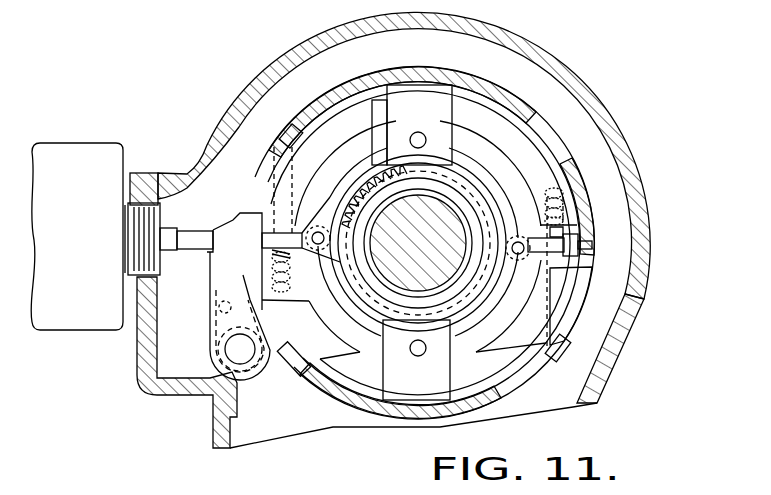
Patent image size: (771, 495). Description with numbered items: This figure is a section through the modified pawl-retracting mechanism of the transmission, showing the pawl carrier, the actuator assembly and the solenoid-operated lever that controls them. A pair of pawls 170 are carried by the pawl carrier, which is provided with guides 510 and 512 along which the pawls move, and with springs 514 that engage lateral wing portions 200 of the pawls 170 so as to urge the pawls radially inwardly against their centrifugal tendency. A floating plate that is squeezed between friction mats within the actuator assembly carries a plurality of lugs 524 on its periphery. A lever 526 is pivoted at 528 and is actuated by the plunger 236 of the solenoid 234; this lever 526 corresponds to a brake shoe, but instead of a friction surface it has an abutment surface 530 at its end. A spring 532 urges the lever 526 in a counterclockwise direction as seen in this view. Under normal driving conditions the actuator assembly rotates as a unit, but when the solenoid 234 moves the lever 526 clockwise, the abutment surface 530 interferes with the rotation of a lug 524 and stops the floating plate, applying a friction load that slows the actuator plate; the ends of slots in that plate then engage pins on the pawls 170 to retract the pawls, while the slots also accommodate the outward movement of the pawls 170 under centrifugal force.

The solenoid 234 is at (80, 148).
The plunger 236 is at (168, 232).
The wing portions 200 is at (247, 247).
The abutment surface 530 is at (247, 217).
The springs 514 is at (270, 262).
The lugs 524 is at (277, 158).
The guide 512 is at (340, 368).
The guide 510 is at (328, 125).
The pawls 170 is at (437, 119).
The spring 532 is at (517, 248).
The lever 526 is at (225, 300).
The pivot 528 is at (237, 353).